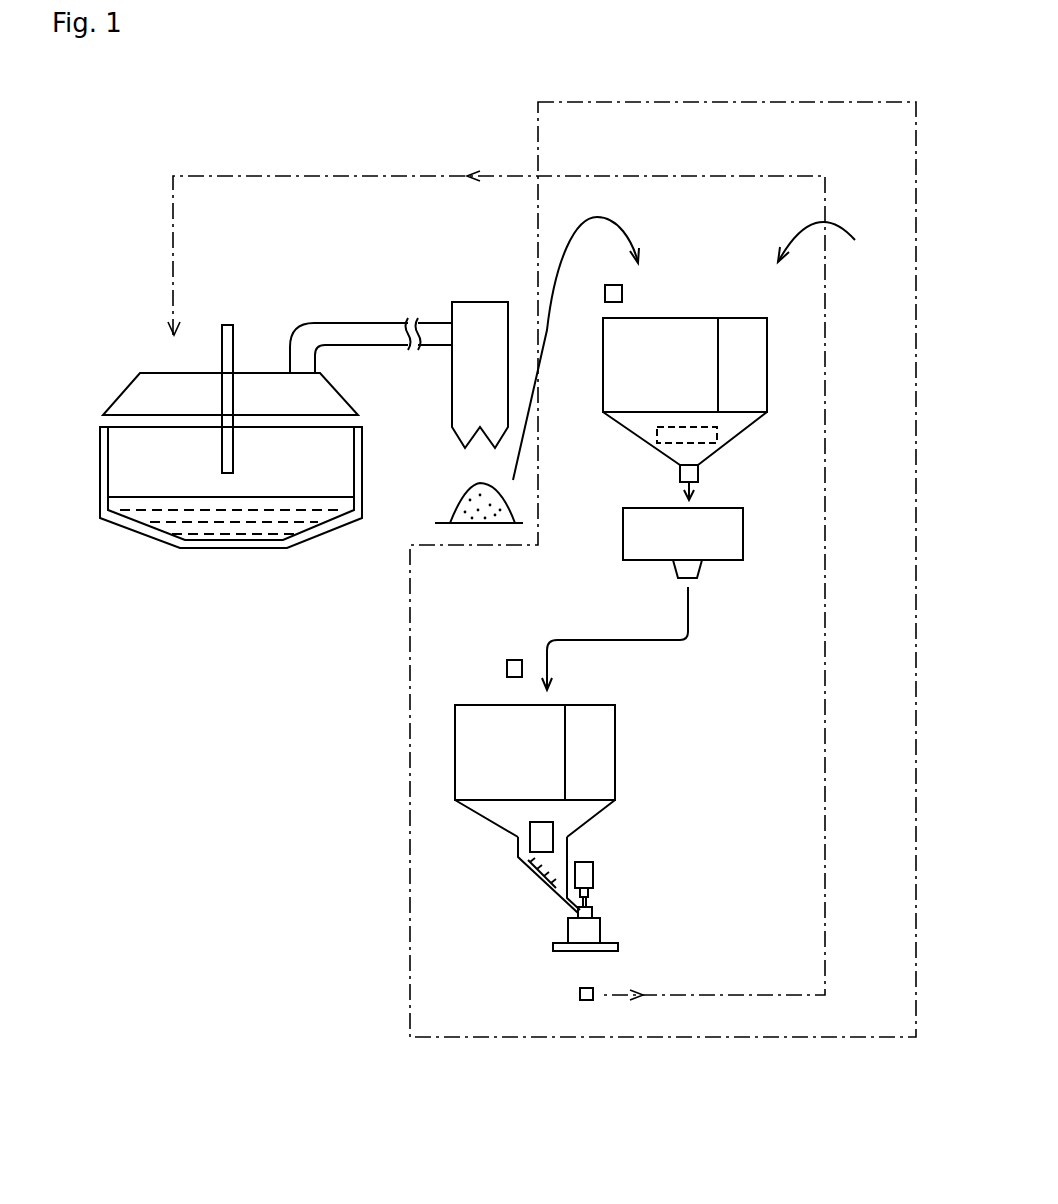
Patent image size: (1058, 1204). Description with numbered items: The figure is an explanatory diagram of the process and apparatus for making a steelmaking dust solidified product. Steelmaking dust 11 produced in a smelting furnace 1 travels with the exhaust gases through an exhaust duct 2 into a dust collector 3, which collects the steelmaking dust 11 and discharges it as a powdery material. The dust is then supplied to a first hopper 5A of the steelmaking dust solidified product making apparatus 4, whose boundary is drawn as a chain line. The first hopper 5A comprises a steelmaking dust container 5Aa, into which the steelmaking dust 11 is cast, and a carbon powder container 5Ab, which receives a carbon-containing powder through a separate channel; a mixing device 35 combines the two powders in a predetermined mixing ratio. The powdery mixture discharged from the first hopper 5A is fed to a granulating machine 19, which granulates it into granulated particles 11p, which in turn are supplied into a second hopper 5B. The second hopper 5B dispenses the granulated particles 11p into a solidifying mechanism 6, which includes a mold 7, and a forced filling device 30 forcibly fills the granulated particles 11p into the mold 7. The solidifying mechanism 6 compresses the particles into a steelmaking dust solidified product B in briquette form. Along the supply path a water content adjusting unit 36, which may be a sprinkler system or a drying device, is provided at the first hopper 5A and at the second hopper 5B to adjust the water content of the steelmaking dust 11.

The smelting furnace 1 is at (93, 445).
The exhaust duct 2 is at (330, 322).
The dust collector 3 is at (482, 320).
The steelmaking dust solidified product making apparatus 4 is at (733, 100).
The first hopper 5A is at (747, 303).
The steelmaking dust container 5Aa is at (627, 342).
The carbon powder container 5Ab is at (753, 353).
The mixing device 35 is at (717, 435).
The steelmaking dust 11 is at (473, 505).
The water content adjusting unit 36 is at (605, 295).
The granulating machine 19 is at (725, 540).
The granulated particles 11p is at (560, 697).
The second hopper 5B is at (493, 740).
The forced filling device 30 is at (528, 872).
The solidifying mechanism 6 is at (602, 898).
The mold 7 is at (568, 928).
The steelmaking dust solidified product B is at (580, 995).